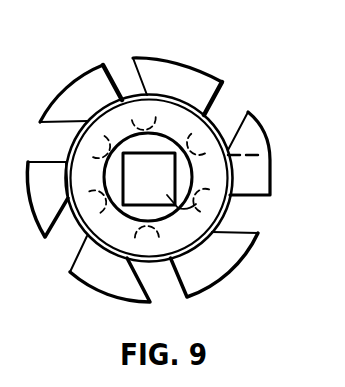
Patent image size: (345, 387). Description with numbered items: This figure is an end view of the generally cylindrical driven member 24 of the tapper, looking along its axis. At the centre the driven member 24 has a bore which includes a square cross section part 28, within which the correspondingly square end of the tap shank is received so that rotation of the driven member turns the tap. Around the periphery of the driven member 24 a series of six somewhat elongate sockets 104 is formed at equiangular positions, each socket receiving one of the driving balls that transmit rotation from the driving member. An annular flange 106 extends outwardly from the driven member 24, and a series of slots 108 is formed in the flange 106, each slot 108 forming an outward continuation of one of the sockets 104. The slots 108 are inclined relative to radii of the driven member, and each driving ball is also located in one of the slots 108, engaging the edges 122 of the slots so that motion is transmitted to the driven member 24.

The driven member 24 is at (194, 62).
The square cross section part 28 is at (226, 211).
The elongate sockets 104 is at (264, 154).
The annular flange 106 is at (77, 98).
The slots 108 is at (217, 100).
The edges 122 is at (113, 72).